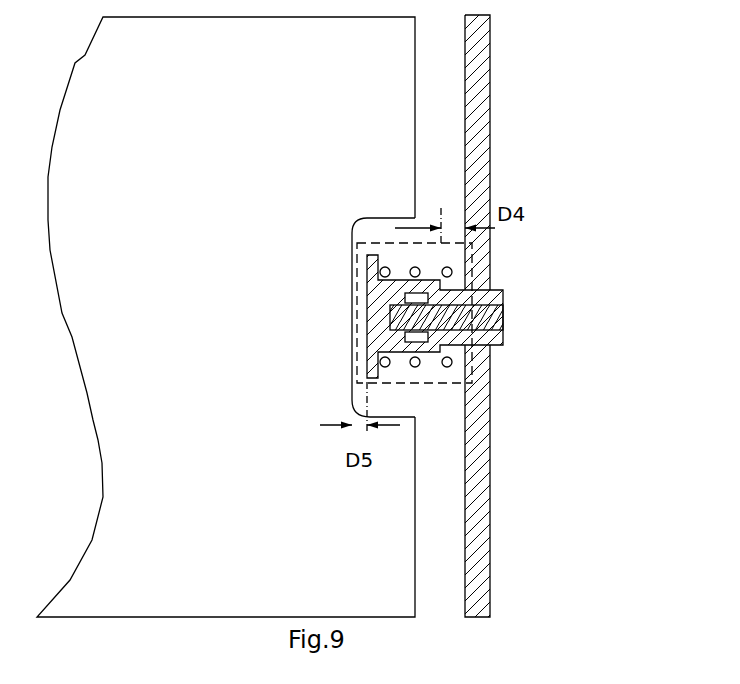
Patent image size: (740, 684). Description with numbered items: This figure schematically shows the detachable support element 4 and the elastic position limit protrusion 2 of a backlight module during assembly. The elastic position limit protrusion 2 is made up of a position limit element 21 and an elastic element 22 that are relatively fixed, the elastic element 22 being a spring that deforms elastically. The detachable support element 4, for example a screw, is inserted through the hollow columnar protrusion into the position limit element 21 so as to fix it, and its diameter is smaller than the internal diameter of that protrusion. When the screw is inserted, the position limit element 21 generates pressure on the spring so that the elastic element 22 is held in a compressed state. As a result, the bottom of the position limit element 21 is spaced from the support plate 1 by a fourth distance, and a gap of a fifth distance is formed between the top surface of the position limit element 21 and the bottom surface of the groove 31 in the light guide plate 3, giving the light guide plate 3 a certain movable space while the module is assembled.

The support plate 1 is at (490, 483).
The elastic position limit protrusion 2 is at (488, 343).
The light guide plate 3 is at (415, 540).
The detachable support element 4 is at (505, 315).
The position limit element 21 is at (440, 345).
The elastic element 22 is at (452, 268).
The groove 31 is at (390, 234).